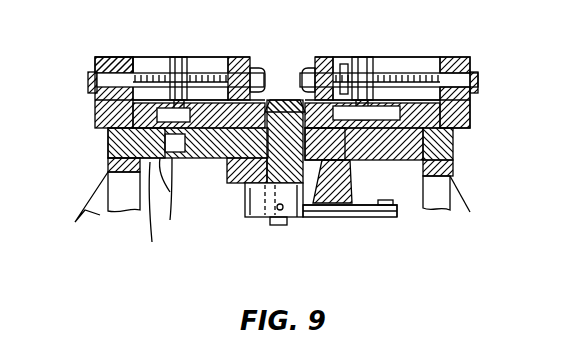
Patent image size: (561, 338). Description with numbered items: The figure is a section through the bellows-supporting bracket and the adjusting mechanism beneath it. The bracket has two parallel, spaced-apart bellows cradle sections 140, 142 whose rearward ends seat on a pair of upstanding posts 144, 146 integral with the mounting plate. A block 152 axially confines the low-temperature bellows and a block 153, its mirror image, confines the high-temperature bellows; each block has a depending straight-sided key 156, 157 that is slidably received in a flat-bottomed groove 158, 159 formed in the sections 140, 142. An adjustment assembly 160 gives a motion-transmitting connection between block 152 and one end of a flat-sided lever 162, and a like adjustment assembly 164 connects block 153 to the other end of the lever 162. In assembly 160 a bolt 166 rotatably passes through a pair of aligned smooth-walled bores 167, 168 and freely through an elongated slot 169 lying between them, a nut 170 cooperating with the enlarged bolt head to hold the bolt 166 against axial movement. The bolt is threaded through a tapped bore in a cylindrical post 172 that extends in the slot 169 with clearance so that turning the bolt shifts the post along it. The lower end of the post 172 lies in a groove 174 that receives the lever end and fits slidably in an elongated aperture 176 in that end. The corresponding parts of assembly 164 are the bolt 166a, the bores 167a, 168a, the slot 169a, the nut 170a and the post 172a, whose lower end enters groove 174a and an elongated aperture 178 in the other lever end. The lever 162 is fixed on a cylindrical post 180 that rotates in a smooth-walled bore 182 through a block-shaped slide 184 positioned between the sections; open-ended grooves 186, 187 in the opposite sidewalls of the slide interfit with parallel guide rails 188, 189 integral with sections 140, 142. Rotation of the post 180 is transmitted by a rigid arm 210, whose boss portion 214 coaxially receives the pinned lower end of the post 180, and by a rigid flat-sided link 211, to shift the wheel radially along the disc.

The bellows cradle section 140 is at (453, 148).
The bellows cradle section 142 is at (108, 148).
The post 144 is at (462, 196).
The post 146 is at (100, 204).
The block 152 is at (472, 62).
The block 153 is at (95, 110).
The tongue or key 156 is at (423, 162).
The tongue or key 157 is at (185, 197).
The groove 158 is at (405, 100).
The groove 159 is at (180, 184).
The adjustment assembly 160 is at (407, 72).
The lever 162 is at (343, 68).
The adjustment assembly 164 is at (149, 68).
The bolt 166 is at (452, 58).
The bolt 166a is at (128, 46).
The bore 167 is at (478, 84).
The bore 167a is at (88, 84).
The bore 168 is at (360, 63).
The bore 168a is at (240, 58).
The slot 169 is at (422, 57).
The slot 169a is at (197, 57).
The nut 170 is at (308, 68).
The nut 170a is at (258, 68).
The cylindrical post 172 is at (405, 58).
The cylindrical post 172a is at (196, 52).
The groove 174 is at (455, 104).
The groove 174a is at (108, 131).
The aperture 176 is at (345, 150).
The aperture 178 is at (155, 211).
The cylindrical post 180 is at (250, 192).
The bore 182 is at (297, 220).
The slide 184 is at (250, 217).
The groove 186 is at (348, 217).
The groove 187 is at (227, 162).
The guide rail 188 is at (320, 203).
The guide rail 189 is at (286, 93).
The arm 210 is at (390, 219).
The link 211 is at (365, 194).
The boss portion 214 is at (268, 222).